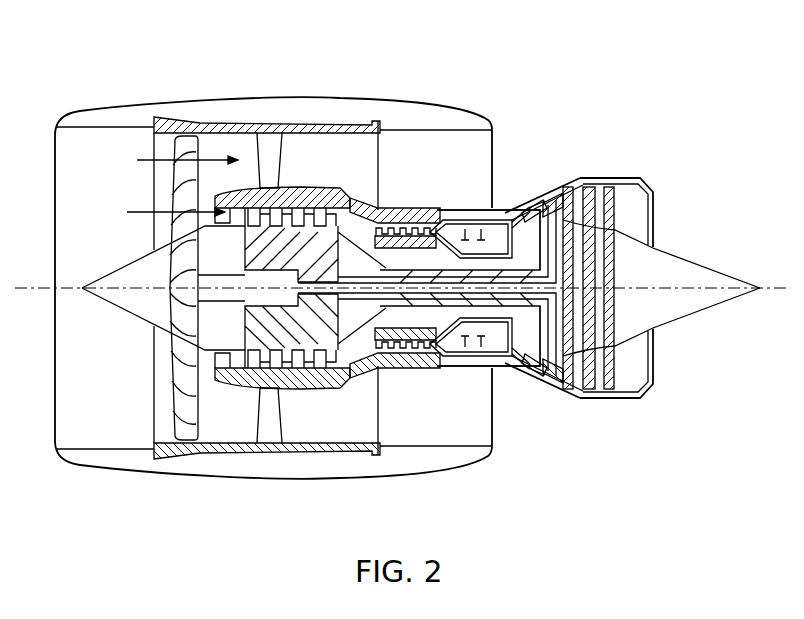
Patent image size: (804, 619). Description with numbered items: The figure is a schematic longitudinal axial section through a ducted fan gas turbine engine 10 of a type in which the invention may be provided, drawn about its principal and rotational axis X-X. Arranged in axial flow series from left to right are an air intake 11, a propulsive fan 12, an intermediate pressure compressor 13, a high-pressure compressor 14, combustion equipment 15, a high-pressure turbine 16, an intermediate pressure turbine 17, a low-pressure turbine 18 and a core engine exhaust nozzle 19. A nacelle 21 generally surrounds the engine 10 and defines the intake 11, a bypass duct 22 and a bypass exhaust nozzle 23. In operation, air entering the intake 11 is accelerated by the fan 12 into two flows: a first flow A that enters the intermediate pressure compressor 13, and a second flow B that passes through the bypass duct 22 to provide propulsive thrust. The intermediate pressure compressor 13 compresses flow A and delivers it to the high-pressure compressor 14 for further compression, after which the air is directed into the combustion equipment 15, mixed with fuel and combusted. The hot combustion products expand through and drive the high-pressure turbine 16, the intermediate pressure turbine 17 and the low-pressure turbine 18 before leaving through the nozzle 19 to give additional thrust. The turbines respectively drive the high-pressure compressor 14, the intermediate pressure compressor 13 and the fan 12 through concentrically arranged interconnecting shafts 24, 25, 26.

The ducted fan gas turbine engine 10 is at (100, 68).
The air intake 11 is at (102, 130).
The propulsive fan 12 is at (170, 408).
The intermediate pressure compressor 13 is at (308, 378).
The high-pressure compressor 14 is at (410, 226).
The combustion equipment 15 is at (447, 366).
The high-pressure turbine 16 is at (507, 373).
The intermediate pressure turbine 17 is at (543, 205).
The low-pressure turbine 18 is at (560, 387).
The core engine exhaust nozzle 19 is at (640, 180).
The nacelle 21 is at (232, 98).
The bypass duct 22 is at (458, 174).
The bypass exhaust nozzle 23 is at (492, 122).
The interconnecting shaft 24 is at (483, 258).
The interconnecting shaft 25 is at (438, 232).
The interconnecting shaft 26 is at (345, 212).